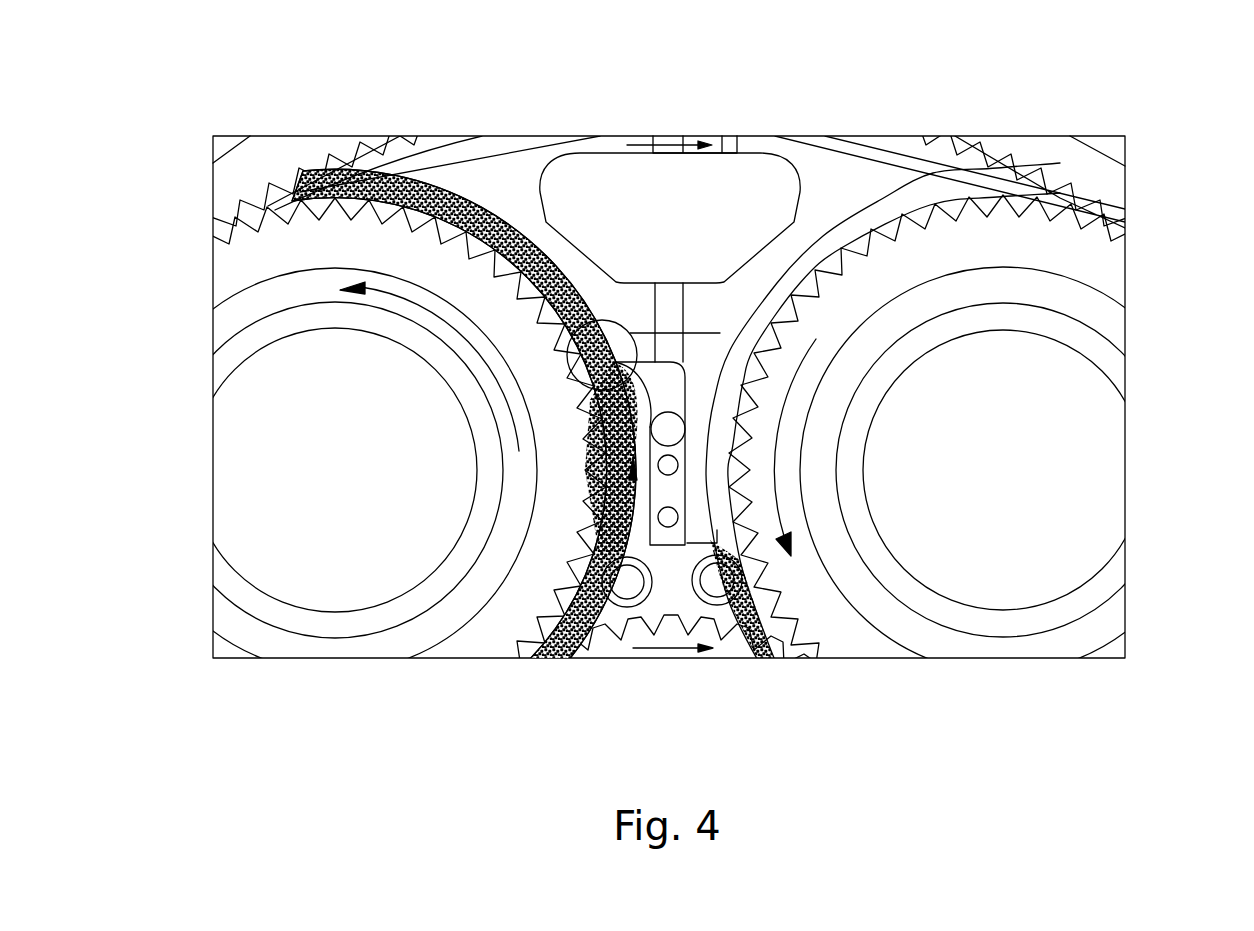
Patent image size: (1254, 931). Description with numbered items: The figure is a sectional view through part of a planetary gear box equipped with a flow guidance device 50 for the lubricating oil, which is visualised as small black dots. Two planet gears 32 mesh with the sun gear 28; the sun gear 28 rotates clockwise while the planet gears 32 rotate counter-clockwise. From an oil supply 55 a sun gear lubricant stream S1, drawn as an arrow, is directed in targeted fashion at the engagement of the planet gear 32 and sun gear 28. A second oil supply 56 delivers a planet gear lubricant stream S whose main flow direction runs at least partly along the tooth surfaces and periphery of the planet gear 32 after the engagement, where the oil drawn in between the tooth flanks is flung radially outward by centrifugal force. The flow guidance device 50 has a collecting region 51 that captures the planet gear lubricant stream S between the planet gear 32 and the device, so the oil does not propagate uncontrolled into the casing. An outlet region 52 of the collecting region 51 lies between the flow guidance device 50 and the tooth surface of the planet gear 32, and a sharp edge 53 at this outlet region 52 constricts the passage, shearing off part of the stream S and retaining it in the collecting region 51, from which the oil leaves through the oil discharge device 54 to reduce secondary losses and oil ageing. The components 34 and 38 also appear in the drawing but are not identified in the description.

The sun gear 28 is at (622, 648).
The planet gear 32 is at (250, 250).
The guide band 34 is at (852, 183).
The ring gear 38 is at (1043, 158).
The flow guidance device 50 is at (700, 340).
The collecting region 51 is at (642, 403).
The outlet region 52 is at (565, 372).
The edge 53 is at (620, 330).
The oil discharge device 54 is at (668, 300).
The oil supply 55 is at (717, 585).
The oil supply 56 is at (627, 587).
The planet gear lubricant stream S is at (638, 490).
The sun gear lubricant stream S1 is at (763, 630).